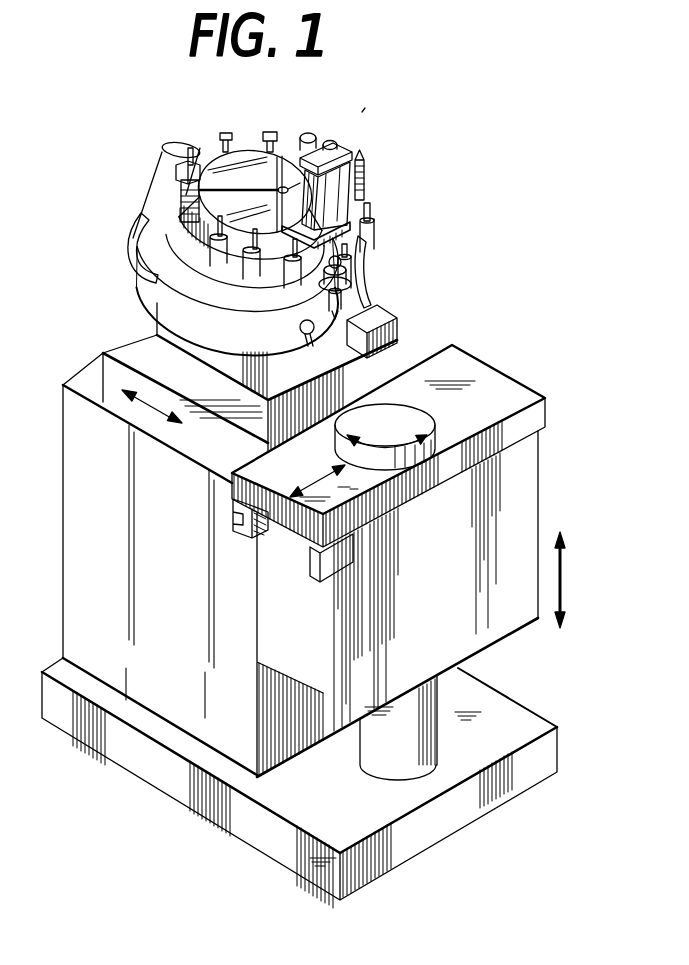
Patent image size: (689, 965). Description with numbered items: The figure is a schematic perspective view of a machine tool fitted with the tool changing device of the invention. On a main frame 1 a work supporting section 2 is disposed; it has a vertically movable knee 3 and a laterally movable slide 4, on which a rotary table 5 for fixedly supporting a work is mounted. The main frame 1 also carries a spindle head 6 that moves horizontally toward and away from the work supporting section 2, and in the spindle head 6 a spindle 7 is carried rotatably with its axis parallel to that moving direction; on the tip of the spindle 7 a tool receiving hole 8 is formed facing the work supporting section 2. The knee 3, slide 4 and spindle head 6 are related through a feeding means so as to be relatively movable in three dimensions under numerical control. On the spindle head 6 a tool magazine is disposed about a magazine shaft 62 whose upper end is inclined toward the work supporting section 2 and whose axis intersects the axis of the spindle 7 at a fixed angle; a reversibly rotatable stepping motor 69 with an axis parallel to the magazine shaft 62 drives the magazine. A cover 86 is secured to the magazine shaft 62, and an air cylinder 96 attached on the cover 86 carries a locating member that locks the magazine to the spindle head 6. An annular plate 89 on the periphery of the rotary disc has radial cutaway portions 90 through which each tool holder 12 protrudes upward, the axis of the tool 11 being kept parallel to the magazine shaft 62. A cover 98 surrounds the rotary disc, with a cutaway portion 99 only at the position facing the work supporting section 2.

The main frame 1 is at (200, 723).
The work supporting section 2 is at (573, 478).
The knee 3 is at (513, 628).
The slide 4 is at (540, 416).
The rotary table 5 is at (400, 408).
The spindle head 6 is at (115, 370).
The spindle 7 is at (305, 353).
The tool receiving hole 8 is at (366, 323).
The tool 11 is at (370, 207).
The tool holder 12 is at (372, 232).
The magazine shaft 62 is at (287, 149).
The stepping motor 69 is at (158, 186).
The cover 86 is at (248, 158).
The annular plate 89 is at (267, 310).
The cutaway portion 90 is at (368, 260).
The air cylinder 96 is at (342, 152).
The cover 98 is at (175, 293).
The cutaway portion 99 is at (362, 303).